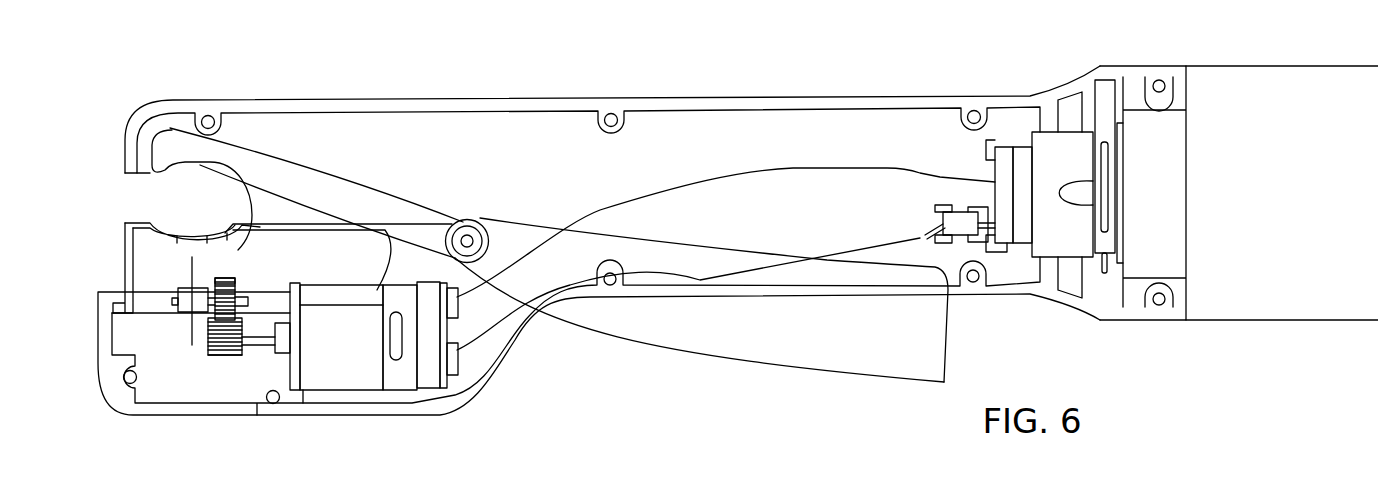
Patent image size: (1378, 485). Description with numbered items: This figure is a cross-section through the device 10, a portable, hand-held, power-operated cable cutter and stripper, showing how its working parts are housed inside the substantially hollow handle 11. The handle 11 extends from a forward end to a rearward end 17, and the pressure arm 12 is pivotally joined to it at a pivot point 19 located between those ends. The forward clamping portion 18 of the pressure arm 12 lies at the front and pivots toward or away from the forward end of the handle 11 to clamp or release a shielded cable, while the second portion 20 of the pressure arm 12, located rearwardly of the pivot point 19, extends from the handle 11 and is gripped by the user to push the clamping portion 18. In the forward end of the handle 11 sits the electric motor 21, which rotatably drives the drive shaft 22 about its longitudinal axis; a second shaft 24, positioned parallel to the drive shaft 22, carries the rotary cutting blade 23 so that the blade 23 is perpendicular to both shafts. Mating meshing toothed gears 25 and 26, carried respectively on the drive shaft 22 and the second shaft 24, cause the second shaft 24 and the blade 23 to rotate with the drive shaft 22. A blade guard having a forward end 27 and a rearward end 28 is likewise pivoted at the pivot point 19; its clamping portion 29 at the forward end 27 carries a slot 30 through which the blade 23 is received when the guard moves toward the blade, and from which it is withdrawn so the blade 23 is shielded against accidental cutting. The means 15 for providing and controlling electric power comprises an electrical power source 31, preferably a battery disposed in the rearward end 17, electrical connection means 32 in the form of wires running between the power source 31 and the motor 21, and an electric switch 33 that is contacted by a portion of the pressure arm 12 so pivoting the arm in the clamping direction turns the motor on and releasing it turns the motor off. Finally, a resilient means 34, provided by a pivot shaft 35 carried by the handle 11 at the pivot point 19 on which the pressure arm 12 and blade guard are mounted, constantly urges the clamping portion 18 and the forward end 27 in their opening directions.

The device 10 is at (628, 80).
The handle 11 is at (733, 97).
The pressure arm 12 is at (693, 352).
The means for providing and controlling the flow of electric power 15 is at (1072, 278).
The rearward end 17 is at (1168, 66).
The forward clamping portion 18 is at (171, 138).
The pivot point 19 is at (452, 230).
The second portion 20 is at (803, 355).
The electric motor 21 is at (317, 380).
The drive shaft 22 is at (253, 343).
The cutting blade 23 is at (190, 333).
The second shaft 24 is at (245, 290).
The toothed gear 25 is at (220, 357).
The toothed gear 26 is at (226, 278).
The forward end of the blade guard 27 is at (120, 245).
The rearward end of the blade guard 28 is at (418, 267).
The clamping portion 29 is at (162, 224).
The slot 30 is at (185, 240).
The electrical power source 31 is at (1337, 310).
The electrical connection means 32 is at (790, 170).
The electric switch 33 is at (930, 217).
The resilient means 34 is at (464, 218).
The pivot shaft 35 is at (474, 238).